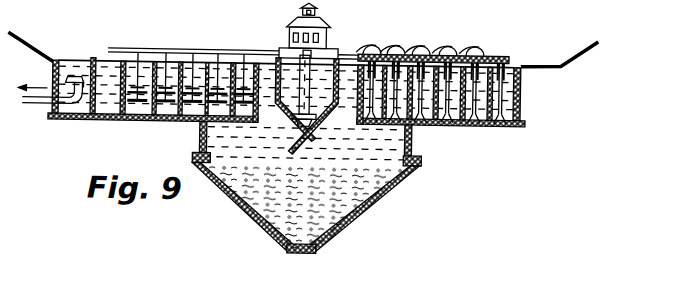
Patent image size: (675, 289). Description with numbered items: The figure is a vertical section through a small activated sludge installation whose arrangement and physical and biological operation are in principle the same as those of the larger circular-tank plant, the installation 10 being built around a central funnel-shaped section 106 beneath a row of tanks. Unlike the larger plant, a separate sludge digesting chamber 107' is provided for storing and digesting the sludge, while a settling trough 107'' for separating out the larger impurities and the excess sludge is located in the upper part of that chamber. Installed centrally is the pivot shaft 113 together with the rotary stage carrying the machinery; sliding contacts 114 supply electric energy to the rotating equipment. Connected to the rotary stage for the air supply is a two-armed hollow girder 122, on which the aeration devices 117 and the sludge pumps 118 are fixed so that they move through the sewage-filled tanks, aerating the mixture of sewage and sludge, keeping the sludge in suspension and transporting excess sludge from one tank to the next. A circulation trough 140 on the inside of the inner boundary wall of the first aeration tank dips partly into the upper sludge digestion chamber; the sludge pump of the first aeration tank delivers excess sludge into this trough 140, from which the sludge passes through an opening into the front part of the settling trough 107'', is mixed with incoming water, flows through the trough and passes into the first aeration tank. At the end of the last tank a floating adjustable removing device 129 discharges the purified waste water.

The flotation tank 10 is at (93, 57).
The floating adjustable removing device 129 is at (71, 63).
The circulation trough 140 is at (262, 56).
The aeration devices 117 is at (142, 99).
The sludge pumps 118 is at (437, 40).
The two-armed hollow girder 122 is at (358, 44).
The pivot shaft 113 is at (305, 108).
The sliding contacts 114 is at (313, 6).
The settling hopper 106 is at (474, 119).
The settling trough 107'' is at (305, 143).
The sludge digesting chamber 107' is at (302, 207).